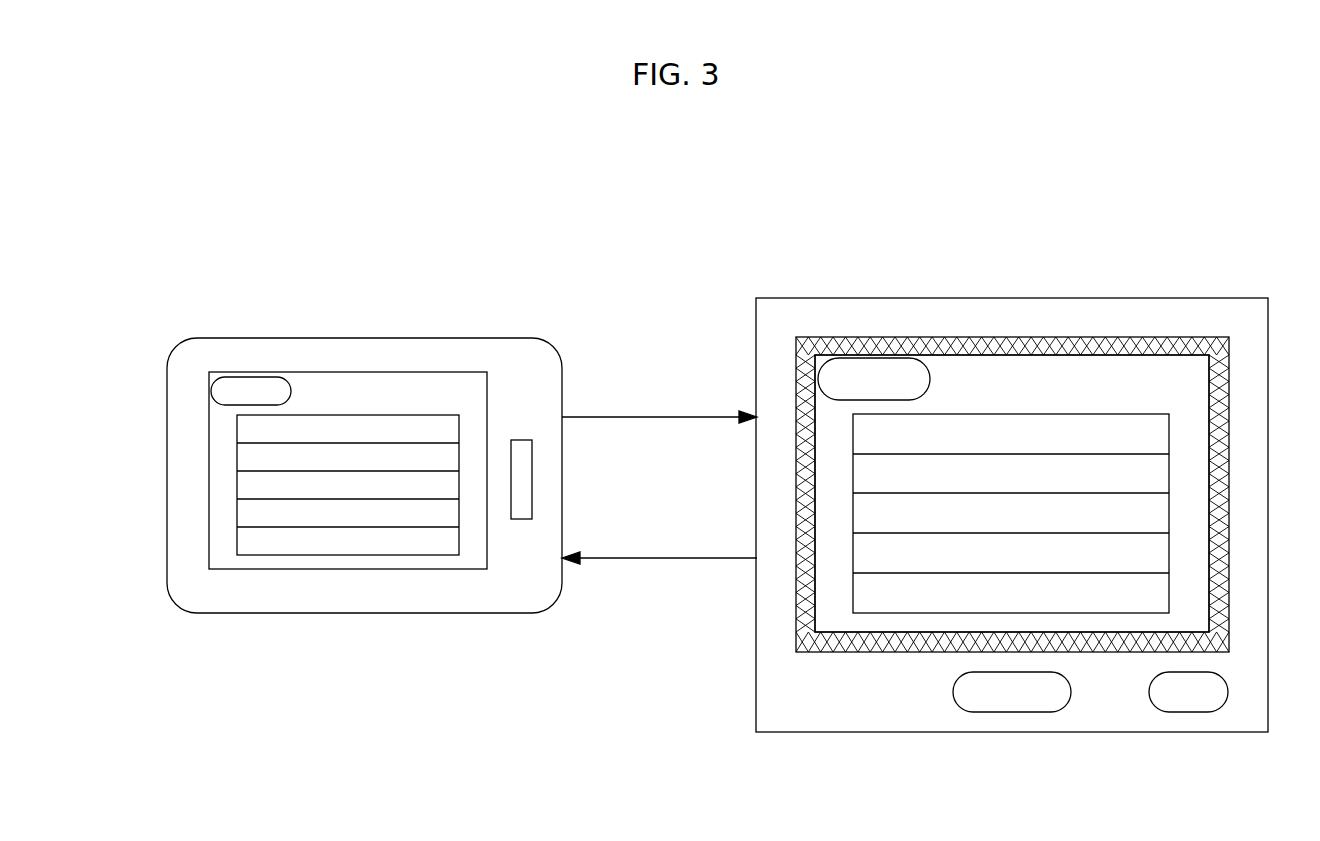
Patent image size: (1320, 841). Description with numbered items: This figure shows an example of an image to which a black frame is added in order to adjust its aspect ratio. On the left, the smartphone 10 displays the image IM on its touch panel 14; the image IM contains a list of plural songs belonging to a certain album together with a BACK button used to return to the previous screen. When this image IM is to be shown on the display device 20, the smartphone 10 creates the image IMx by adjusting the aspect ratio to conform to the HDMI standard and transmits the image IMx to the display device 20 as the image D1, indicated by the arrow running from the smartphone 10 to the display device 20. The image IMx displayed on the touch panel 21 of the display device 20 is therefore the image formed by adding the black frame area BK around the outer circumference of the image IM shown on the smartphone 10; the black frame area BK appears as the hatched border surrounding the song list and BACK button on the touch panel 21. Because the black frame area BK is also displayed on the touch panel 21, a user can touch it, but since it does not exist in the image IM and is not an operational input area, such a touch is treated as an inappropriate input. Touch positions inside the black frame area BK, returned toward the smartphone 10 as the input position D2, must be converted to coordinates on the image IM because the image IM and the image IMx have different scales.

The smartphone 10 is at (364, 474).
The touch panel 14 is at (423, 569).
The image IM is at (467, 393).
The image D1 is at (638, 415).
The input position data D2 is at (647, 560).
The display device 20 is at (1012, 503).
The touch panel 21 is at (868, 653).
The black frame area BK is at (1118, 647).
The image IMx is at (1156, 382).